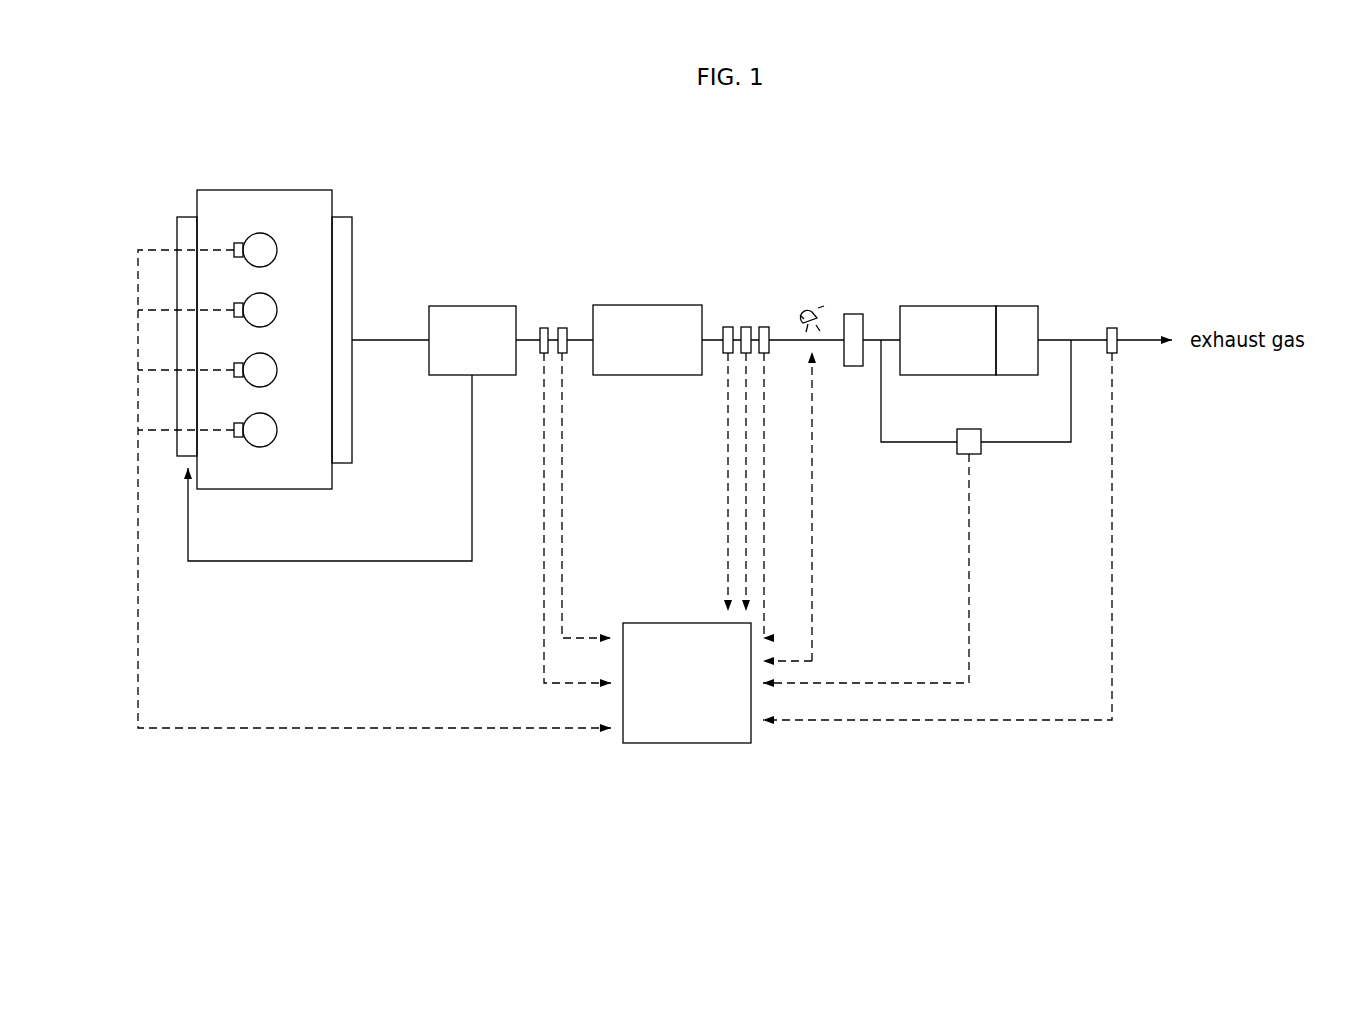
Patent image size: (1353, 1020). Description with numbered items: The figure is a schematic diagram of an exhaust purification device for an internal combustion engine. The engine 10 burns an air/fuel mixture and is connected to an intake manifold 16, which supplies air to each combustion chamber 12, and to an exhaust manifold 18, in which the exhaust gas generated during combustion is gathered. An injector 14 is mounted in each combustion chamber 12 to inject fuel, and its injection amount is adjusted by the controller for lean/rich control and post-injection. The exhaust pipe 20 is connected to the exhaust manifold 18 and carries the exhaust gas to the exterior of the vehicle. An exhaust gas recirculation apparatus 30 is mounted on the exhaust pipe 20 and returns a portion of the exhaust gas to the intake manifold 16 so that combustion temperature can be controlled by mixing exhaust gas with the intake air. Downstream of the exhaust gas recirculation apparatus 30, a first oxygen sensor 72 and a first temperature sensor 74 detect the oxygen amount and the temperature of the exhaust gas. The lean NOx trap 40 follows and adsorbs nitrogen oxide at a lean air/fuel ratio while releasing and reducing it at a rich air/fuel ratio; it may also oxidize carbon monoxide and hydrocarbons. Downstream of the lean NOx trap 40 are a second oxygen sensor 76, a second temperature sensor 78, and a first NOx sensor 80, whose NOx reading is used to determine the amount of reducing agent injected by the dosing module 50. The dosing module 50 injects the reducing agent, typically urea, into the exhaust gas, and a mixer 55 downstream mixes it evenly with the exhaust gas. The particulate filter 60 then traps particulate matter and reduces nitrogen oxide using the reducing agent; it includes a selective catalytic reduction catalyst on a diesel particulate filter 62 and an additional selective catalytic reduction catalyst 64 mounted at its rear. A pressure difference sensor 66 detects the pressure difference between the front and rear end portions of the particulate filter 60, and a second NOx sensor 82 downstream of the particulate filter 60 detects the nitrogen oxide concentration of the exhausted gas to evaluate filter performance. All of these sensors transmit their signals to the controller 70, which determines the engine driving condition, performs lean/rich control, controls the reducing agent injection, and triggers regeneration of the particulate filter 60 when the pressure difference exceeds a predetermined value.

The engine 10 is at (291, 166).
The combustion chamber 12 is at (257, 232).
The injector 14 is at (233, 242).
The intake manifold 16 is at (185, 216).
The exhaust manifold 18 is at (346, 216).
The exhaust pipe 20 is at (392, 339).
The exhaust gas recirculation apparatus 30 is at (451, 305).
The lean NOx trap 40 is at (640, 304).
The dosing module 50 is at (808, 310).
The mixer 55 is at (853, 313).
The particulate filter 60 is at (972, 293).
The selective catalytic reduction catalyst on a diesel particulate filter 62 is at (920, 305).
The additional selective catalytic reduction catalyst 64 is at (1022, 305).
The pressure difference sensor 66 is at (978, 456).
The controller 70 is at (676, 744).
The first oxygen sensor 72 is at (543, 327).
The first temperature sensor 74 is at (563, 327).
The second oxygen sensor 76 is at (728, 326).
The second temperature sensor 78 is at (746, 326).
The first NOx sensor 80 is at (764, 326).
The second NOx sensor 82 is at (1114, 327).